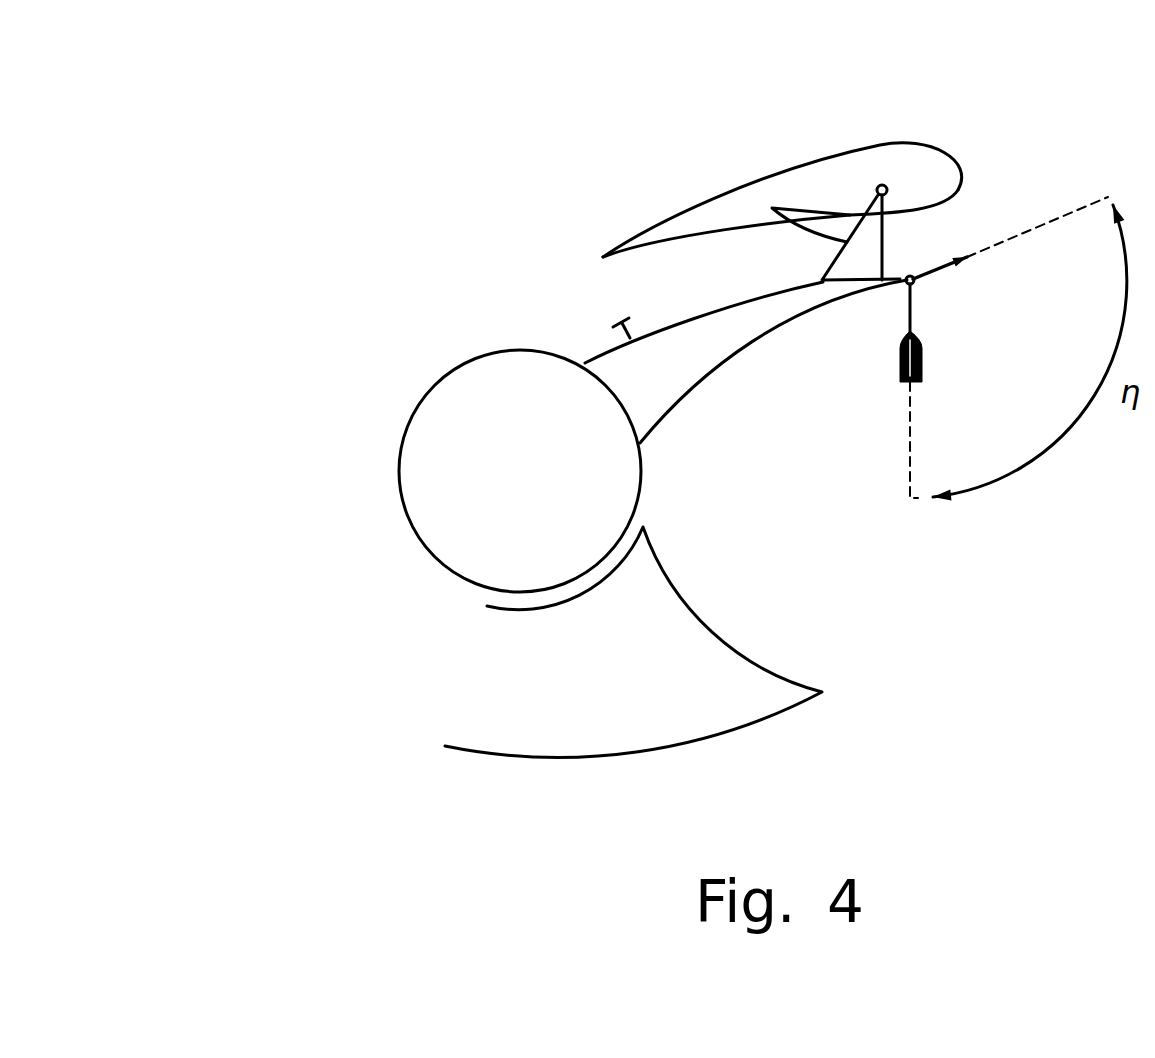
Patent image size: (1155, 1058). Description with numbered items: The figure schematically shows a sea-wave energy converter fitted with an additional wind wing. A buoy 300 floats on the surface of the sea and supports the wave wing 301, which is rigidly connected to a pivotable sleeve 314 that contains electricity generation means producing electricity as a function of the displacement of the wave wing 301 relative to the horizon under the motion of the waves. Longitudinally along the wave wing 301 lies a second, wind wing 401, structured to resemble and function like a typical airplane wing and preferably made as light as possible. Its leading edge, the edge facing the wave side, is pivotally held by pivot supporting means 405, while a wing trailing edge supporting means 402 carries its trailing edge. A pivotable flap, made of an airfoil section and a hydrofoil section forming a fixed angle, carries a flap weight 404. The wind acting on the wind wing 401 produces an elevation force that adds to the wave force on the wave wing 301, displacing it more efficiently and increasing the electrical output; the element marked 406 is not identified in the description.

The buoy 300 is at (563, 757).
The wave wing 301 is at (663, 383).
The pivotable sleeve 314 is at (415, 408).
The wind wing 401 is at (815, 193).
The wing trailing edge supporting means 402 is at (617, 318).
The flap weight 404 is at (898, 368).
The pivot supporting means 405 is at (772, 208).
The wing upper surface 406 is at (843, 135).